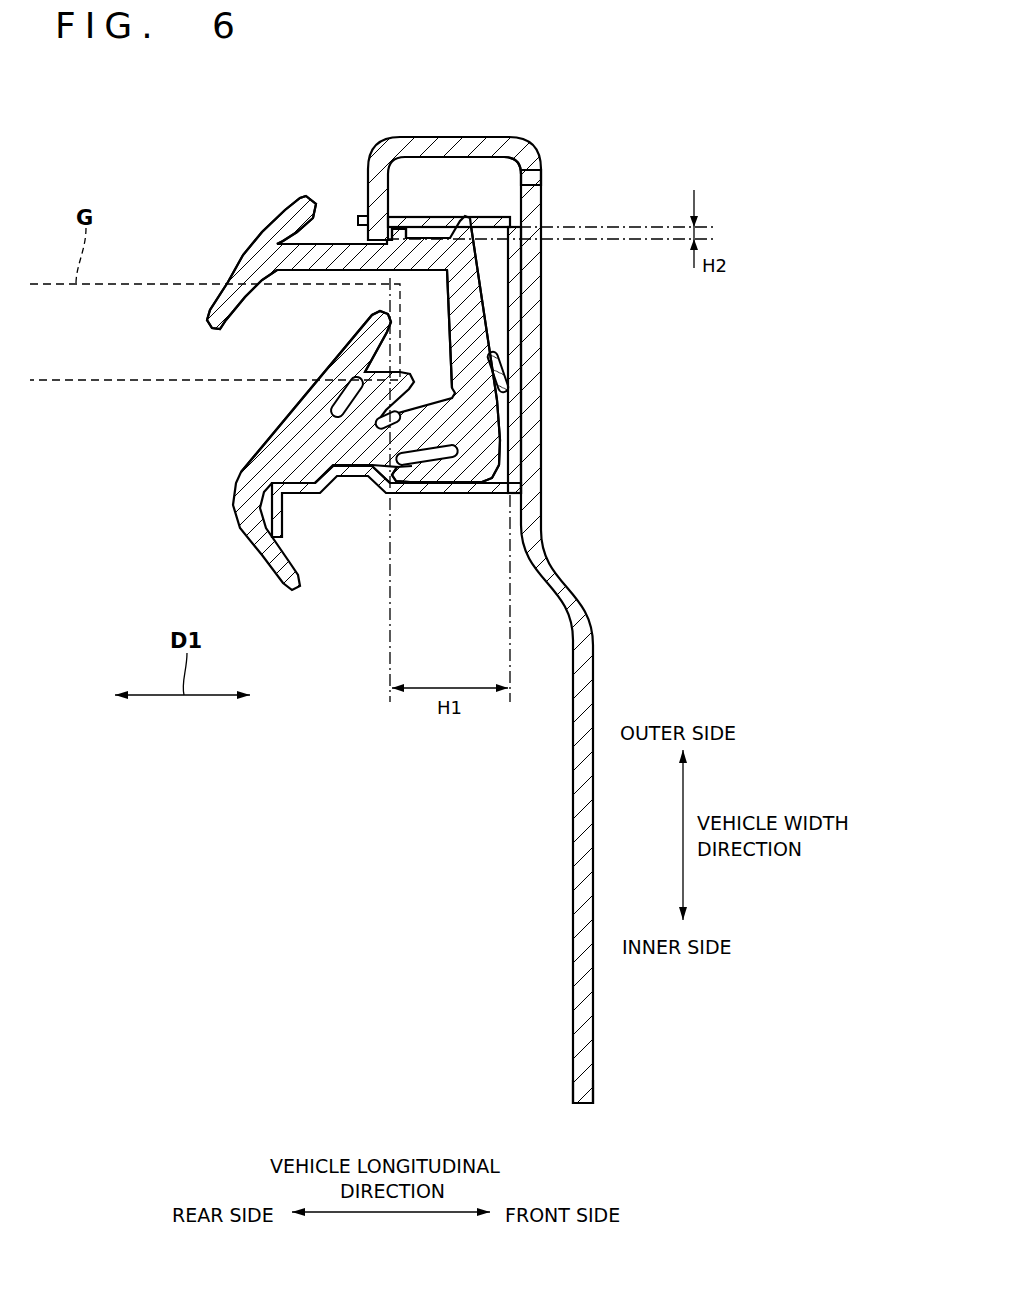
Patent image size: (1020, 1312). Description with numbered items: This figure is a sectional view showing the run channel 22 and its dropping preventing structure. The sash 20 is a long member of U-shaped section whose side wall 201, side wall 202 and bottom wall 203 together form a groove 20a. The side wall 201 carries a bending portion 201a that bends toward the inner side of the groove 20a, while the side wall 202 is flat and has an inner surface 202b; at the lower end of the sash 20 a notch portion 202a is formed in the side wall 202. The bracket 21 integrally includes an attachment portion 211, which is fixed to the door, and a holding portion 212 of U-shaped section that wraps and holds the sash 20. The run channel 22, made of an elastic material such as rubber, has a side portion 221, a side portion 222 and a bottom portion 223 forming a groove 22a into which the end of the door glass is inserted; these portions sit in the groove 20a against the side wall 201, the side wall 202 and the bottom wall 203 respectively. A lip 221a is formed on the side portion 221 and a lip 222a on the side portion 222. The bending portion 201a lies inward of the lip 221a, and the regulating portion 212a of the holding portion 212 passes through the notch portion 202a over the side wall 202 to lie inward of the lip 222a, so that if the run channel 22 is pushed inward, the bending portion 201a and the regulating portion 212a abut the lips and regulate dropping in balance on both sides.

The sash 20 is at (542, 170).
The groove 20a is at (498, 302).
The bracket 21 is at (602, 569).
The run channel 22 is at (200, 499).
The groove 22a is at (445, 345).
The side wall 201 is at (463, 493).
The bending portion 201a is at (380, 481).
The side wall 202 is at (427, 217).
The notch portion 202a is at (363, 217).
The inner surface 202b is at (514, 175).
The bottom wall 203 is at (517, 447).
The attachment portion 211 is at (572, 1083).
The holding portion 212 is at (462, 137).
The regulating portion 212a is at (343, 272).
The side portion 221 is at (313, 440).
The lip 221a is at (417, 478).
The side portion 222 is at (310, 250).
The lip 222a is at (404, 226).
The bottom portion 223 is at (490, 350).